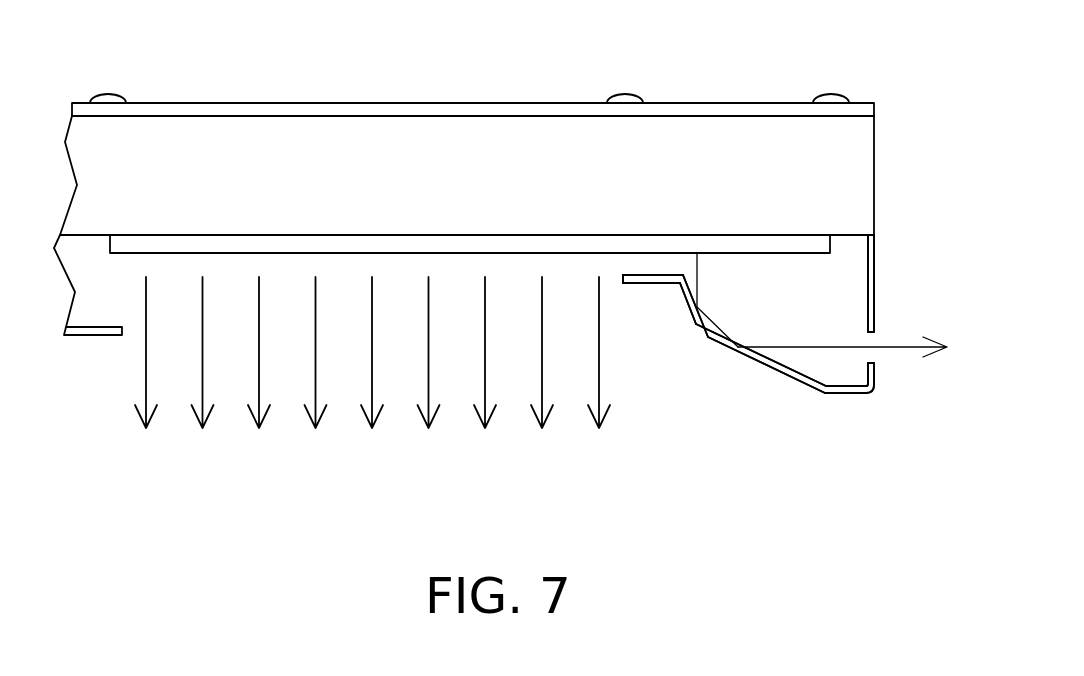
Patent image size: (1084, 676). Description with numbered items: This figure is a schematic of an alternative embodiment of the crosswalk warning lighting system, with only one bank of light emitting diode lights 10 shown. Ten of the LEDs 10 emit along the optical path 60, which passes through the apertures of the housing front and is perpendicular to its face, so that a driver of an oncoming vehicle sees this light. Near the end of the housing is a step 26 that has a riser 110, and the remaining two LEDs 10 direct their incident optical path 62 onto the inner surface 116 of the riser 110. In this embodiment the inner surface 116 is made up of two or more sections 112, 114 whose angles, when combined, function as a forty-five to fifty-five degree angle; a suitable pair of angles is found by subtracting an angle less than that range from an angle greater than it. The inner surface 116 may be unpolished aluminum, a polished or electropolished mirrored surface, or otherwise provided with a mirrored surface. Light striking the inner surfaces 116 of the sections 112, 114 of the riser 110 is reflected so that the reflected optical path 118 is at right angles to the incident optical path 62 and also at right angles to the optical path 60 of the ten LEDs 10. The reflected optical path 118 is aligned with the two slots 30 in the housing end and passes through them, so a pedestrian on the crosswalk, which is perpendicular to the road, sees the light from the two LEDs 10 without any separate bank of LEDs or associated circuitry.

The light emitting diode lights 10 is at (465, 243).
The step 26 is at (842, 393).
The slots 30 is at (872, 340).
The optical path 60 is at (128, 463).
The incident optical path 62 is at (697, 267).
The riser 110 is at (699, 338).
The first section 112 is at (698, 313).
The second section 114 is at (783, 377).
The inner surface 116 is at (700, 289).
The reflected optical path 118 is at (823, 347).